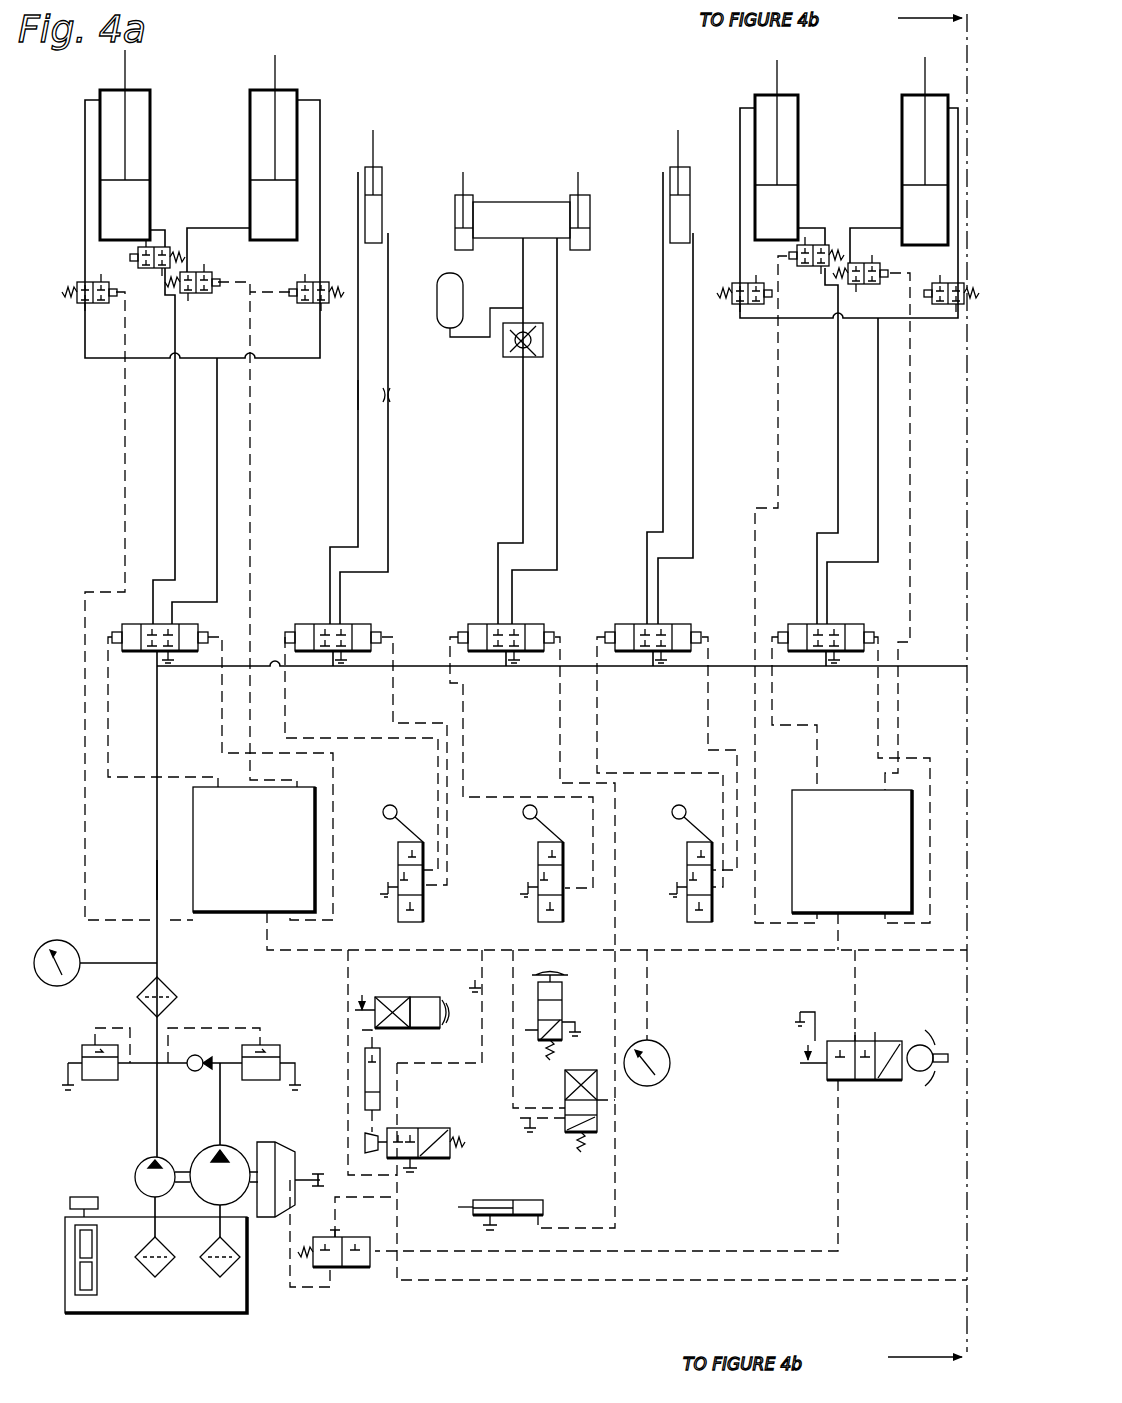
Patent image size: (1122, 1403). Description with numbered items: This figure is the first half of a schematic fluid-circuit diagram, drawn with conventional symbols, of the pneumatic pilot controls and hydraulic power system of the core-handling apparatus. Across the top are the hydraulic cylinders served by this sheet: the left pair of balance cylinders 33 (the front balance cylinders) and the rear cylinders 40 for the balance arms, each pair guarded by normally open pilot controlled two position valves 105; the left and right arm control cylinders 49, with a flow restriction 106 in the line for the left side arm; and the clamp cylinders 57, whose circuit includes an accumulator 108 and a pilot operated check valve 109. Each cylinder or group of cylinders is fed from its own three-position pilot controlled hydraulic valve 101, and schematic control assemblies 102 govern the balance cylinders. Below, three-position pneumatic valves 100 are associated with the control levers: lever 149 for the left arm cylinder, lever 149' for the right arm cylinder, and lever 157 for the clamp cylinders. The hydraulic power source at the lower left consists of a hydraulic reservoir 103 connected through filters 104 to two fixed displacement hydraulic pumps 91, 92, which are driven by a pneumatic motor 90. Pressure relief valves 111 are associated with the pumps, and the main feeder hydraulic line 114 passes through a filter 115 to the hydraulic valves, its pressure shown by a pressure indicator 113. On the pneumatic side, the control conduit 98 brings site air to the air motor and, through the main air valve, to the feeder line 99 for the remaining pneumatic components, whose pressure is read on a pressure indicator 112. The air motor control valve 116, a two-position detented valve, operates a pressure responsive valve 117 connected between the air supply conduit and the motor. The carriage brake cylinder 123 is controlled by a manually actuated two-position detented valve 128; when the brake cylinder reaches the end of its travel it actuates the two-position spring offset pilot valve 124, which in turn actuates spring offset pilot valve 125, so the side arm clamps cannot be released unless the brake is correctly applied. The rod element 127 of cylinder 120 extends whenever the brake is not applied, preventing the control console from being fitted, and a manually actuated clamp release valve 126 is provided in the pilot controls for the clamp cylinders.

The hydraulic cylinders 33 is at (248, 118).
The rear cylinders 40 is at (898, 105).
The arm control cylinder 49 is at (385, 172).
The clamp cylinders 57 is at (566, 195).
The normally open pilot controlled two position valves 105 is at (200, 322).
The flow restriction 106 is at (392, 398).
The accumulator 108 is at (440, 312).
The pilot operated check valve 109 is at (543, 340).
The three-position pilot controlled hydraulic valve 101 is at (625, 632).
The control assemblies 102 is at (233, 905).
The control lever 149 is at (384, 847).
The control lever 157 is at (522, 812).
The control lever 149' is at (667, 863).
The three-position pneumatic valves 100 is at (538, 910).
The main feeder hydraulic line 114 is at (157, 877).
The pressure indicator 113 is at (60, 945).
The filter 115 is at (165, 1003).
The pressure relief valves 111 is at (75, 1045).
The manually actuated two-position detented valve 128 is at (415, 1000).
The manually actuated clamp release valve 126 is at (538, 992).
The feeder line 99 is at (722, 952).
The pressure indicator 112 is at (668, 1070).
The air motor control valve 116 is at (878, 1085).
The brake cylinder 123 is at (365, 1095).
The two-position spring offset pilot valve 124 is at (405, 1133).
The spring offset pilot valve 125 is at (597, 1100).
The rod element 127 is at (466, 1207).
The cylinder 120 is at (540, 1186).
The pressure responsive valve 117 is at (348, 1270).
The control conduit 98 is at (710, 1282).
The hydraulic pump 92 is at (148, 1170).
The hydraulic pump 91 is at (228, 1155).
The pneumatic motor 90 is at (268, 1210).
The filters 104 is at (226, 1268).
The hydraulic reservoir 103 is at (125, 1300).